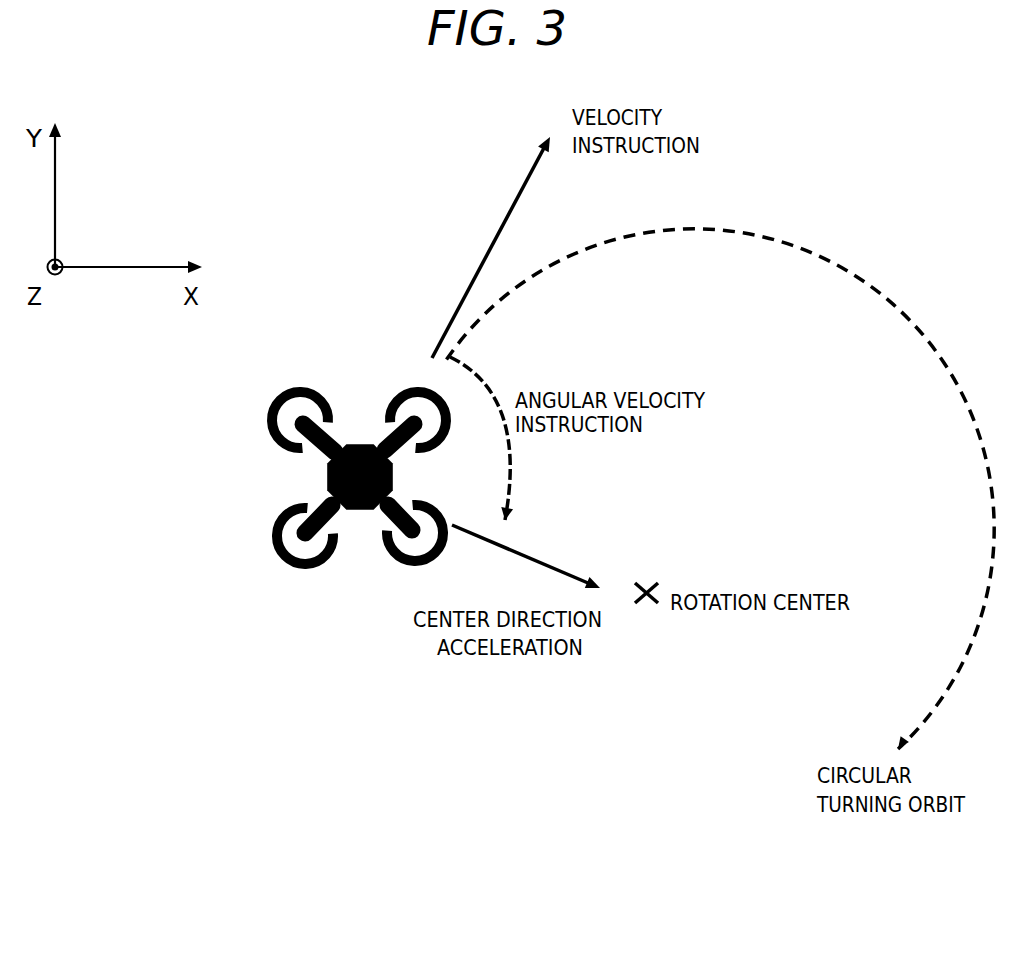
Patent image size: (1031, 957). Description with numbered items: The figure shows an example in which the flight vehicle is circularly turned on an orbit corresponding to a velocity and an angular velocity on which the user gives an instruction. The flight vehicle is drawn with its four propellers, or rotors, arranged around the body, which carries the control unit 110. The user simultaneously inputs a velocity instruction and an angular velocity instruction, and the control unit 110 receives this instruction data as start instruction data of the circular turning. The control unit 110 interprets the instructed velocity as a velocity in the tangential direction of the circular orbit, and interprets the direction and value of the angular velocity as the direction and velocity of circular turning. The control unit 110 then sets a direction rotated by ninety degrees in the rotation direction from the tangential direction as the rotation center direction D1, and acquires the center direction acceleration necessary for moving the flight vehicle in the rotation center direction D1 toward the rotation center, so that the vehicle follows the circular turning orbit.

The control unit 110 is at (327, 475).
The rotation center direction D1 is at (548, 563).